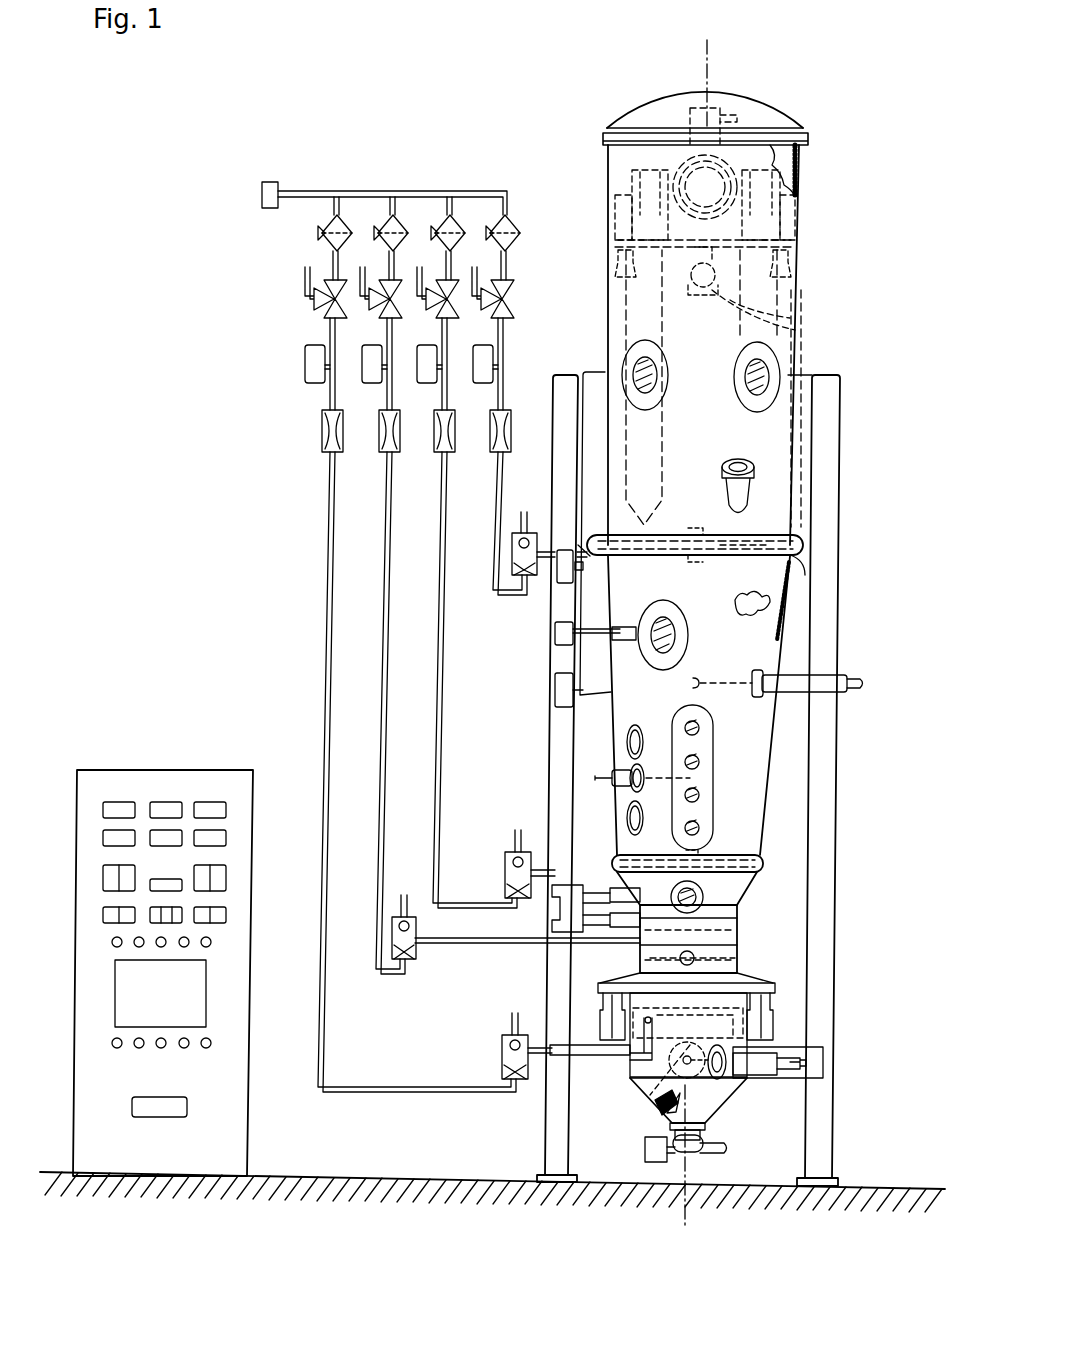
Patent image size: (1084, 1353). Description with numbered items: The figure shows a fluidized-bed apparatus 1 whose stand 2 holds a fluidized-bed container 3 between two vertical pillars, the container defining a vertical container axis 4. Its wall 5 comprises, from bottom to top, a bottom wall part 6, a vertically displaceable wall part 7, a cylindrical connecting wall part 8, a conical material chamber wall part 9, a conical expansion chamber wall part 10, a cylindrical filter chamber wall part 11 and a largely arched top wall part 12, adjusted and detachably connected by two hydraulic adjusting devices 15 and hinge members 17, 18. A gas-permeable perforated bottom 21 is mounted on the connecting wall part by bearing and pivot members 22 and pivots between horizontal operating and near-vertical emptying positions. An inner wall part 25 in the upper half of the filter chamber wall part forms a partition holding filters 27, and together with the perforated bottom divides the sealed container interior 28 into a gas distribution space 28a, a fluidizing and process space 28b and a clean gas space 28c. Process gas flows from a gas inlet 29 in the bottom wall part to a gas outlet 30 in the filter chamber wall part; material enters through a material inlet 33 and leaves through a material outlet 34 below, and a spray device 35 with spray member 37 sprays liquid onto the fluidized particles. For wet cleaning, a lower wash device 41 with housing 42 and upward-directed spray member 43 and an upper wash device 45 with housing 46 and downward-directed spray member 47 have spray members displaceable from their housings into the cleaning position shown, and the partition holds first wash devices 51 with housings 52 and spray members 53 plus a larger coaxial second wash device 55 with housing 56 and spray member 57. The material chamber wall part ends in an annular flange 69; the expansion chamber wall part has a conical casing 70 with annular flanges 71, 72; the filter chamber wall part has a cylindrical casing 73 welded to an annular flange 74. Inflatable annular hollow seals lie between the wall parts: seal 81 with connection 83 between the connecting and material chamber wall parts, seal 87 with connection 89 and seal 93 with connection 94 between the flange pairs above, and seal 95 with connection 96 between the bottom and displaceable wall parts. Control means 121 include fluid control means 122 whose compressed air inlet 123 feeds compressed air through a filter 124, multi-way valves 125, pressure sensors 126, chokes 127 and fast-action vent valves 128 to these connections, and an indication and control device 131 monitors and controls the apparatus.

The fluidized-bed apparatus 1 is at (205, 196).
The stand 2 is at (575, 375).
The fluidized-bed container 3 is at (648, 103).
The container axis 4 is at (704, 68).
The wall 5 is at (622, 110).
The bottom wall part 6 is at (722, 1108).
The vertically displaceable wall part 7 is at (745, 993).
The connecting wall part 8 is at (740, 970).
The material chamber wall part 9 is at (752, 878).
The expansion chamber wall part 10 is at (765, 788).
The filter chamber wall part 11 is at (800, 312).
The top wall part 12 is at (800, 122).
The hydraulic adjusting devices 15 is at (735, 1048).
The hinge members 17 is at (550, 918).
The hinge members 18 is at (557, 640).
The perforated bottom 21 is at (660, 960).
The bearing and pivot members 22 is at (735, 940).
The inner wall part 25 is at (720, 286).
The filter 27 is at (795, 330).
The container interior 28 is at (758, 597).
The gas distribution space 28a is at (657, 1120).
The fluidizing and process space 28b is at (770, 630).
The clean gas space 28c is at (800, 160).
The gas inlet 29 is at (668, 1107).
The gas outlet 30 is at (678, 165).
The material inlet 33 is at (754, 470).
The discharge valve 34 is at (703, 1143).
The spray device 35 is at (605, 778).
The spray member 37 is at (740, 745).
The wet cleaning device 41 is at (775, 1075).
The housing 42 is at (773, 1030).
The spray member 43 is at (662, 1088).
The wet cleaning device 45 is at (860, 688).
The housing 46 is at (765, 675).
The spray member 47 is at (700, 675).
The first wet cleaning devices 51 is at (620, 222).
The housing 52 is at (615, 230).
The spray member 53 is at (620, 275).
The second wet cleaning device 55 is at (720, 112).
The housing 56 is at (707, 108).
The spray member 57 is at (800, 290).
The annular flange 69 is at (765, 882).
The conical casing 70 is at (790, 718).
The annular flange 71 is at (765, 864).
The annular flange 72 is at (800, 568).
The cylindrical casing 73 is at (790, 318).
The annular flange 74 is at (790, 540).
The annular hollow seal 81 is at (740, 925).
The connection 83 is at (603, 948).
The annular hollow seal 87 is at (735, 858).
The connection 89 is at (612, 865).
The annular hollow seal 93 is at (760, 545).
The connection 94 is at (582, 548).
The annular hollow seal 95 is at (745, 1020).
The connection 96 is at (600, 1010).
The control means 121 is at (385, 175).
The fluid control means 122 is at (437, 192).
The compressed air inlet 123 is at (265, 190).
The filter 124 is at (390, 250).
The multi-way valves 125 is at (390, 320).
The pressure sensors 126 is at (368, 383).
The chokes 127 is at (378, 450).
The fast-action vent valves 128 is at (530, 580).
The indication and control device 131 is at (214, 770).